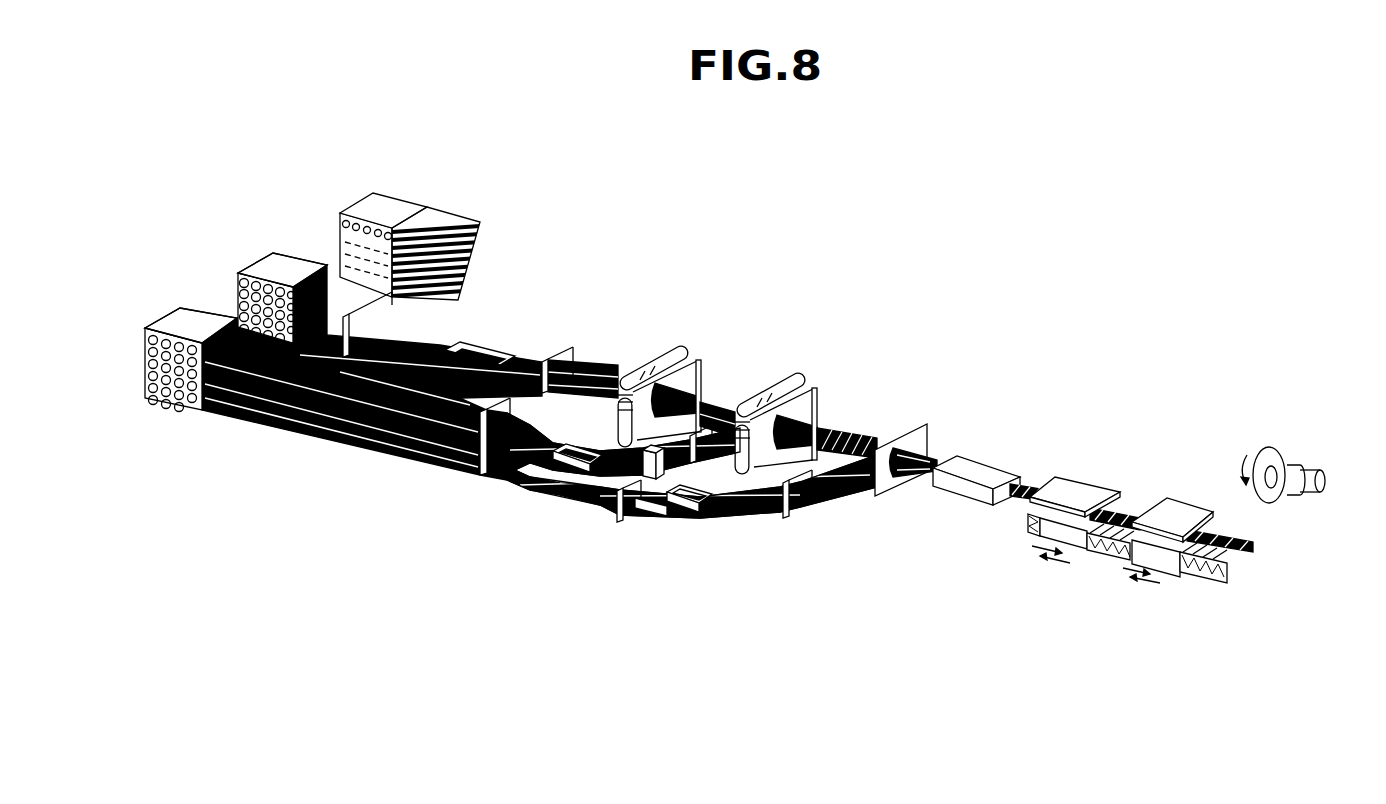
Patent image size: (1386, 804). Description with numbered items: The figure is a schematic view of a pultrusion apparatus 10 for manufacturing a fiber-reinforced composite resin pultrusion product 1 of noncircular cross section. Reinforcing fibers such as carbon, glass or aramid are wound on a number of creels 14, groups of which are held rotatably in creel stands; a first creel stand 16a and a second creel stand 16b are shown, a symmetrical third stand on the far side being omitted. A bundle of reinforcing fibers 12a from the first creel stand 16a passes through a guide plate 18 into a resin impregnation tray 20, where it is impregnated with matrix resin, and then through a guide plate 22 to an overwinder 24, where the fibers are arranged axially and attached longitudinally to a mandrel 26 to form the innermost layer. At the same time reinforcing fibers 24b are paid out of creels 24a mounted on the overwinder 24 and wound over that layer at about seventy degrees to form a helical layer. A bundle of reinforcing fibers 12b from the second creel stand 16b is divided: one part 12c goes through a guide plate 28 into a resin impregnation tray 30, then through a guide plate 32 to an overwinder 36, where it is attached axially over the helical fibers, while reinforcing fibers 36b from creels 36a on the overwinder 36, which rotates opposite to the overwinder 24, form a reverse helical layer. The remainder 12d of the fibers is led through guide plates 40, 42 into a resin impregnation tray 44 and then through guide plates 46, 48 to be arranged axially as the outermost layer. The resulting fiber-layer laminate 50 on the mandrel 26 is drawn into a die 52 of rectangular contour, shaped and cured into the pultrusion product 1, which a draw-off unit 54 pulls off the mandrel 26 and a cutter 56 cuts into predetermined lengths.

The pultrusion apparatus 10 is at (747, 310).
The bundle of reinforcing fibers 12a is at (527, 358).
The bundle of reinforcing fibers 12b is at (417, 453).
The part of the bundle of reinforcing fibers 12c is at (530, 437).
The remainder of the reinforcing fibers 12d is at (597, 502).
The creel 14 is at (163, 334).
The first creel stand 16a is at (295, 270).
The second creel stand 16b is at (192, 322).
The guide plate 18 is at (392, 297).
The resin impregnation tray 20 is at (475, 352).
The guide plate 22 is at (575, 348).
The overwinder 24 is at (686, 357).
The creel 24a is at (643, 370).
The reinforcing fibers 24b is at (698, 362).
The mandrel 26 is at (712, 403).
The guide plate 28 is at (457, 458).
The resin impregnation tray 30 is at (545, 490).
The guide plate 32 is at (640, 450).
The overwinder 36 is at (813, 390).
The creel 36a is at (760, 397).
The reinforcing fibers 36b is at (820, 397).
The guide plate 40 is at (485, 477).
The guide plate 42 is at (630, 527).
The resin impregnation tray 44 is at (667, 533).
The guide plate 46 is at (805, 515).
The guide plate 48 is at (920, 437).
The fiber-layer laminate 50 is at (930, 457).
The die 52 is at (967, 490).
The fiber-reinforced composite resin pultrusion product 1 is at (1033, 487).
The draw-off unit 54 is at (1137, 493).
The cutter 56 is at (1300, 455).